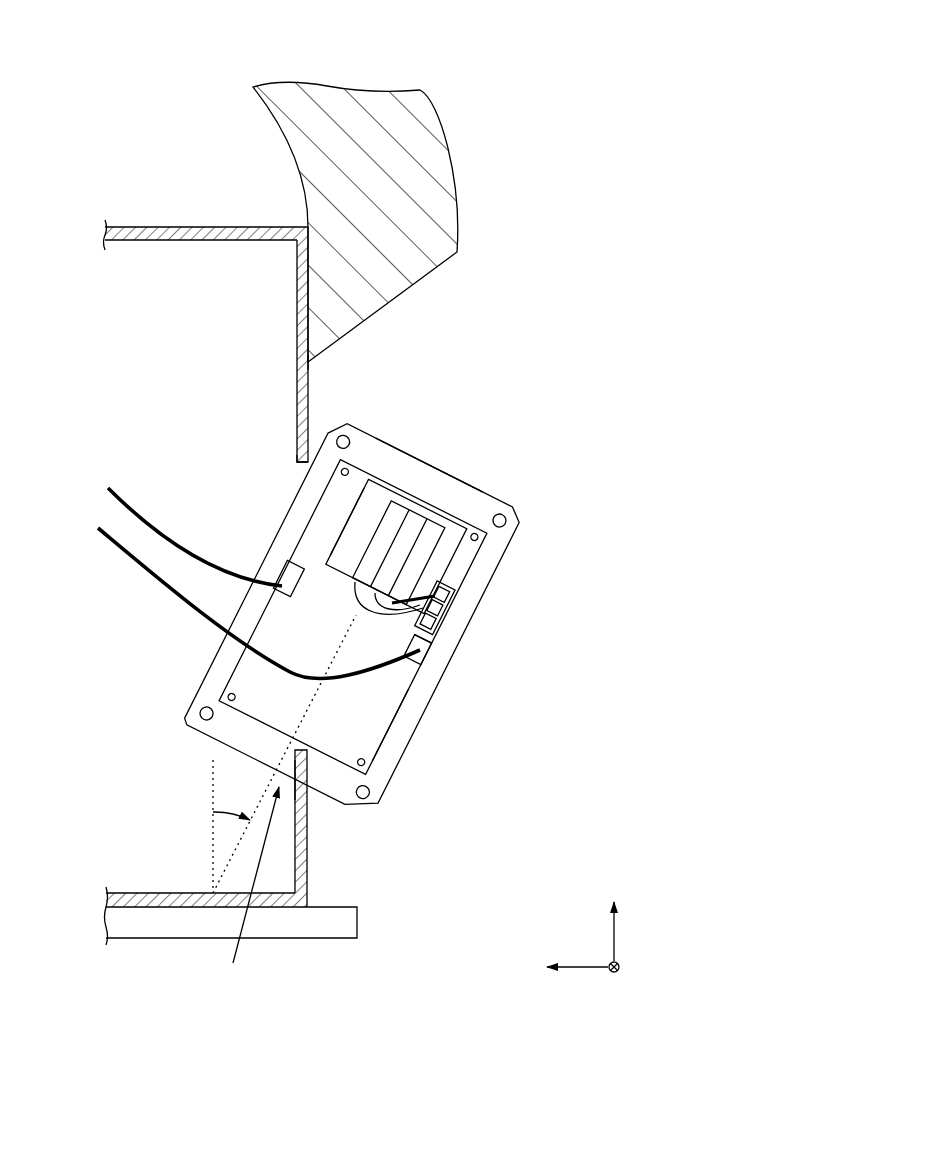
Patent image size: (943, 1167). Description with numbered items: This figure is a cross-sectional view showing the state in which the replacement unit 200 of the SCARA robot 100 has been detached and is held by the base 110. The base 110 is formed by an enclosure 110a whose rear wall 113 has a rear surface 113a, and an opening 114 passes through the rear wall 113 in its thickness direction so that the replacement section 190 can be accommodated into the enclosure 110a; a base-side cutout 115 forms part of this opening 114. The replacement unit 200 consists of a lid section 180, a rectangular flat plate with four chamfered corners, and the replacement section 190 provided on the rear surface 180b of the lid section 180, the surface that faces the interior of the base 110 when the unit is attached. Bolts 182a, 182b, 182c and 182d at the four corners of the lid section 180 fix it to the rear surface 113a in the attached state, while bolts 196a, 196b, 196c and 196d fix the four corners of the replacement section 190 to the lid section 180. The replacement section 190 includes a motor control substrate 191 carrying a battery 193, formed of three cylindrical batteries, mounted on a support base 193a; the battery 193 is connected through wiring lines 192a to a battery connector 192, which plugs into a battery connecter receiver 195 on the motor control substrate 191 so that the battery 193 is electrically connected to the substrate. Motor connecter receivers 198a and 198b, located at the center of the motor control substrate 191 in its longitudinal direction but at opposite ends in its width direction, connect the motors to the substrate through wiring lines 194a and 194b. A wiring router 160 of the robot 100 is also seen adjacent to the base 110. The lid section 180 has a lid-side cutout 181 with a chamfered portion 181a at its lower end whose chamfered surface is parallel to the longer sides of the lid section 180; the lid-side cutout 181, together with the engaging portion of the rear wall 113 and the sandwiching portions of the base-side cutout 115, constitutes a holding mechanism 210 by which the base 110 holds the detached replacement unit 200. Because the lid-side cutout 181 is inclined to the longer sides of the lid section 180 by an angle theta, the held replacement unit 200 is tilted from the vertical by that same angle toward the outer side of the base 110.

The SCARA robot 100 is at (582, 90).
The base 110 is at (132, 203).
The enclosure 110a is at (207, 222).
The rear wall 113 is at (297, 317).
The rear surface 113a is at (310, 370).
The opening 114 is at (298, 468).
The base-side cutout 115 is at (309, 772).
The wiring router 160 is at (430, 222).
The lid section 180 is at (477, 478).
The rear surface 180b is at (413, 472).
The lid-side cutout 181 is at (312, 797).
The chamfered portion 181a is at (298, 772).
The bolt 182a is at (351, 437).
The bolt 182b is at (199, 715).
The bolt 182c is at (370, 792).
The bolt 182d is at (510, 518).
The replacement section 190 is at (478, 578).
The motor control substrate 191 is at (383, 712).
The battery connector 192 is at (448, 618).
The wiring lines 192a is at (398, 626).
The battery 193 is at (413, 515).
The support base 193a is at (357, 525).
The wiring line 194a is at (295, 671).
The wiring line 194b is at (182, 546).
The battery connecter receiver 195 is at (448, 600).
The bolt 196a is at (352, 471).
The bolt 196b is at (228, 697).
The bolt 196c is at (366, 763).
The bolt 196d is at (478, 535).
The motor connecter receiver 198a is at (428, 666).
The motor connecter receiver 198b is at (290, 570).
The replacement unit 200 is at (518, 537).
The holding mechanism 210 is at (243, 892).